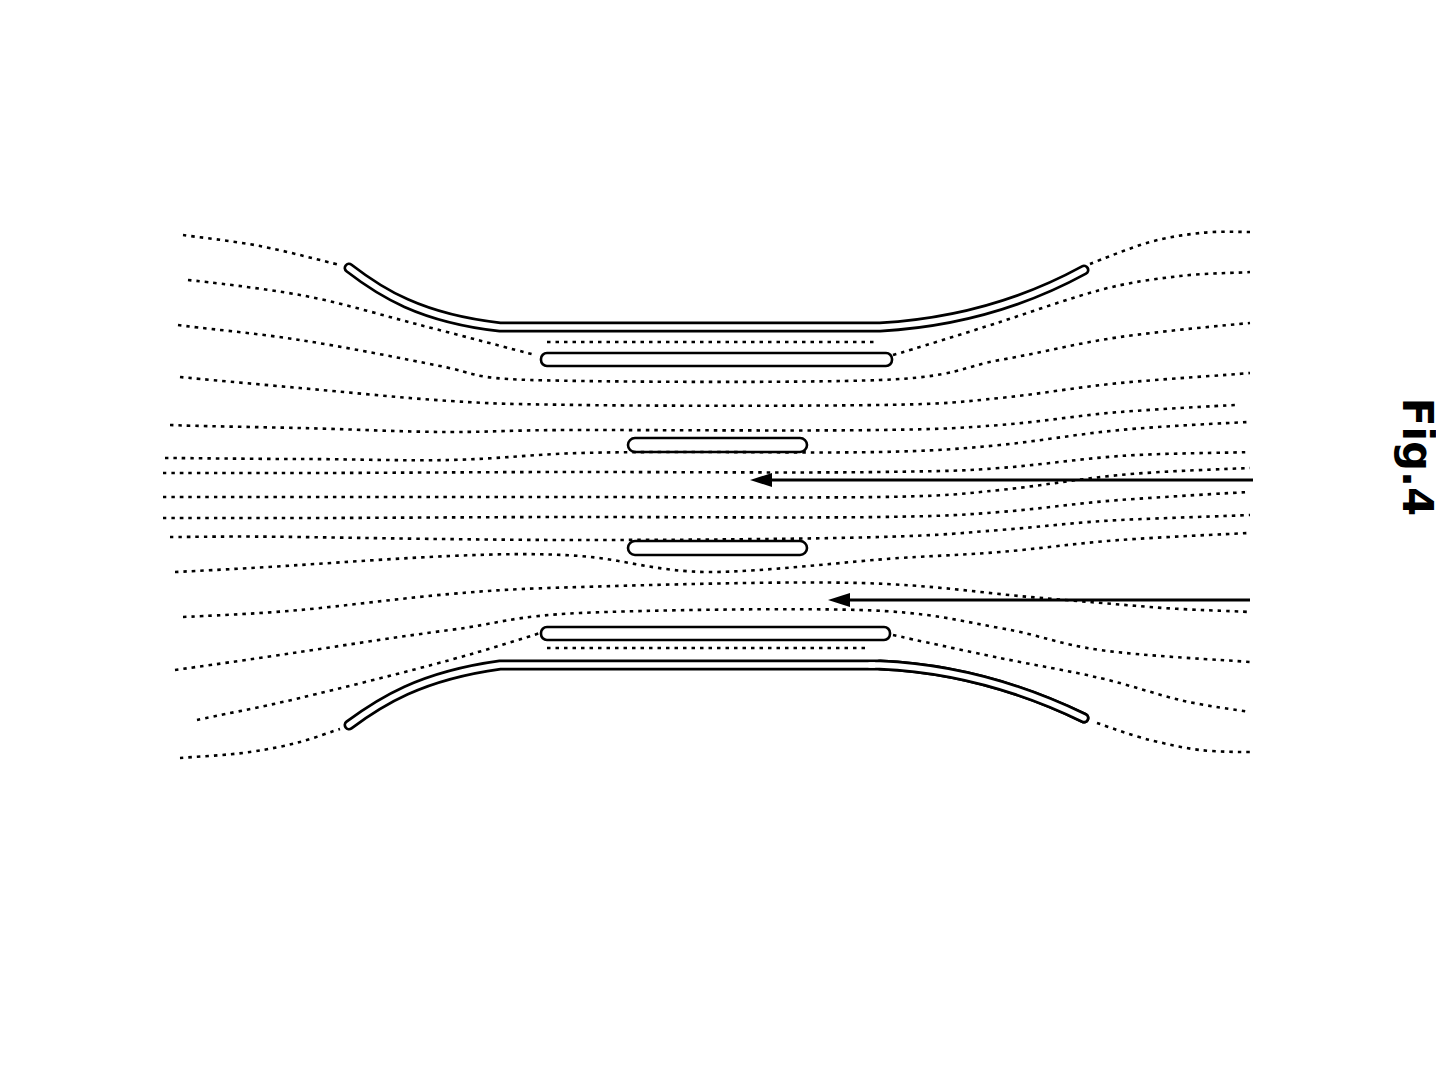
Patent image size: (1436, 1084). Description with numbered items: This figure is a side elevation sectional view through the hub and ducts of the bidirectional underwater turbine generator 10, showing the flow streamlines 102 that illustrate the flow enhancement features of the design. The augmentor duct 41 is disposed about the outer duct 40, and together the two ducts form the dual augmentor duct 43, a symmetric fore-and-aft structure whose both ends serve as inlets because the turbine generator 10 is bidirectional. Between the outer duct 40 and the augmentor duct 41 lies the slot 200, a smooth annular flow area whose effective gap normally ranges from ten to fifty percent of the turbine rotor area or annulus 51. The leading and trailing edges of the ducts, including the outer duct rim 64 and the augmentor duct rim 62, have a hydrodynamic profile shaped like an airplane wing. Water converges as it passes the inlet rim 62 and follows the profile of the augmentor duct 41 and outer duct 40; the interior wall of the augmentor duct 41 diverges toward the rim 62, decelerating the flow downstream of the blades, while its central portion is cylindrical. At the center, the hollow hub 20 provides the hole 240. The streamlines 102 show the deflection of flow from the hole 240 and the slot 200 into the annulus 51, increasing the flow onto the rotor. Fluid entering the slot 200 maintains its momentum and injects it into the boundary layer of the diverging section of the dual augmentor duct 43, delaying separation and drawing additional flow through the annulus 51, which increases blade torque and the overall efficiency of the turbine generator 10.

The underwater turbine generator 10 is at (752, 445).
The hollow hub 20 is at (683, 452).
The outer duct 40 is at (597, 625).
The augmentor duct 41 is at (648, 670).
The dual augmentor duct 43 is at (885, 700).
The annulus 51 is at (1063, 604).
The augmentor duct rim 62 is at (345, 264).
The outer duct rim 64 is at (534, 357).
The flow streamlines 102 is at (242, 329).
The slot 200 is at (708, 338).
The hollow hub 240 is at (1035, 482).